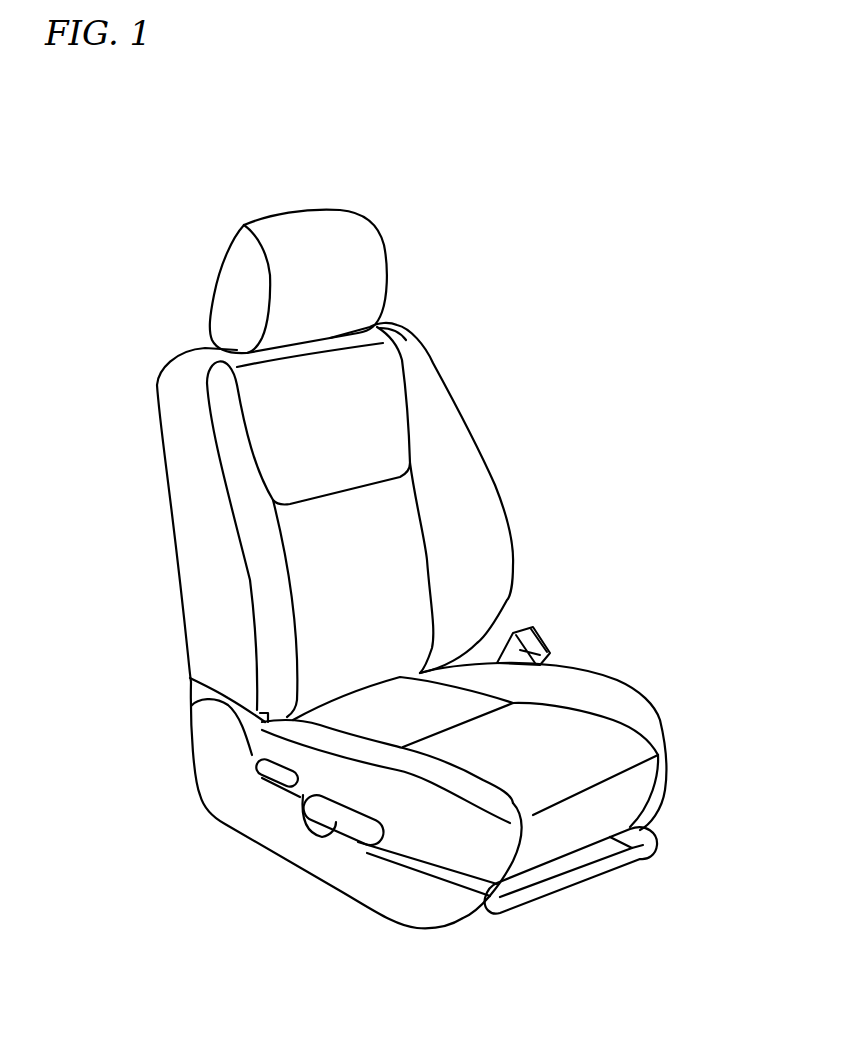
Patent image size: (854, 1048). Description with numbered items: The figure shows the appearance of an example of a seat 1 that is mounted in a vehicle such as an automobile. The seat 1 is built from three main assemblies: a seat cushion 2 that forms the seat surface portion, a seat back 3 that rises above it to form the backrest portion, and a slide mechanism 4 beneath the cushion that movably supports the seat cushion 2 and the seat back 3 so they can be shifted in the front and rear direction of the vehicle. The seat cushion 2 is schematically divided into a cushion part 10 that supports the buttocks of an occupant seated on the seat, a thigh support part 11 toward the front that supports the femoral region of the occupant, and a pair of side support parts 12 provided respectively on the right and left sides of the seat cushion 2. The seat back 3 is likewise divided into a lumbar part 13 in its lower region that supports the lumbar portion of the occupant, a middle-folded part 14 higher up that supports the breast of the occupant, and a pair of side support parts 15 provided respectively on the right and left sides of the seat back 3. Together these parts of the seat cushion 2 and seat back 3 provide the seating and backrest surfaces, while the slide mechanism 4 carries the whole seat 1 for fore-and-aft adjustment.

The seat 1 is at (127, 137).
The seat cushion 2 is at (638, 680).
The seat back 3 is at (457, 410).
The slide mechanism 4 is at (507, 920).
The cushion part 10 is at (455, 703).
The thigh support part 11 is at (590, 740).
The side support parts 12 is at (588, 685).
The lumbar part 13 is at (330, 602).
The middle-folded part 14 is at (293, 432).
The side support parts 15 is at (213, 568).